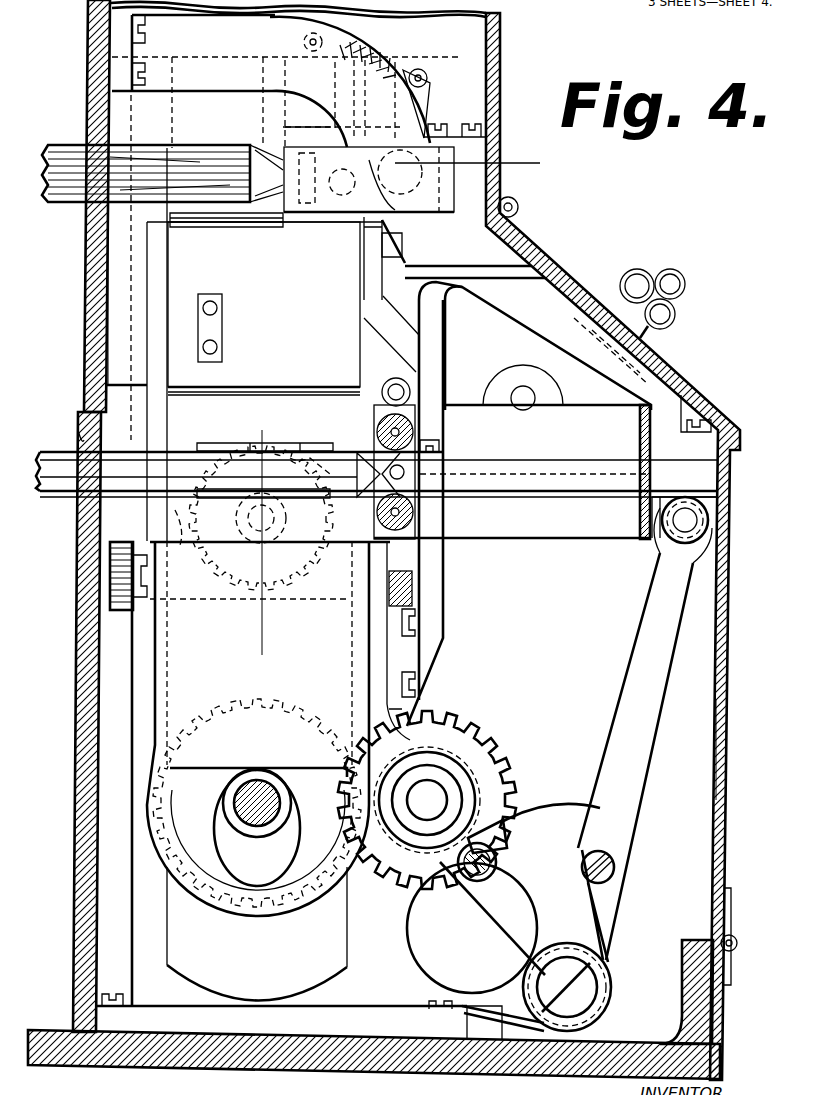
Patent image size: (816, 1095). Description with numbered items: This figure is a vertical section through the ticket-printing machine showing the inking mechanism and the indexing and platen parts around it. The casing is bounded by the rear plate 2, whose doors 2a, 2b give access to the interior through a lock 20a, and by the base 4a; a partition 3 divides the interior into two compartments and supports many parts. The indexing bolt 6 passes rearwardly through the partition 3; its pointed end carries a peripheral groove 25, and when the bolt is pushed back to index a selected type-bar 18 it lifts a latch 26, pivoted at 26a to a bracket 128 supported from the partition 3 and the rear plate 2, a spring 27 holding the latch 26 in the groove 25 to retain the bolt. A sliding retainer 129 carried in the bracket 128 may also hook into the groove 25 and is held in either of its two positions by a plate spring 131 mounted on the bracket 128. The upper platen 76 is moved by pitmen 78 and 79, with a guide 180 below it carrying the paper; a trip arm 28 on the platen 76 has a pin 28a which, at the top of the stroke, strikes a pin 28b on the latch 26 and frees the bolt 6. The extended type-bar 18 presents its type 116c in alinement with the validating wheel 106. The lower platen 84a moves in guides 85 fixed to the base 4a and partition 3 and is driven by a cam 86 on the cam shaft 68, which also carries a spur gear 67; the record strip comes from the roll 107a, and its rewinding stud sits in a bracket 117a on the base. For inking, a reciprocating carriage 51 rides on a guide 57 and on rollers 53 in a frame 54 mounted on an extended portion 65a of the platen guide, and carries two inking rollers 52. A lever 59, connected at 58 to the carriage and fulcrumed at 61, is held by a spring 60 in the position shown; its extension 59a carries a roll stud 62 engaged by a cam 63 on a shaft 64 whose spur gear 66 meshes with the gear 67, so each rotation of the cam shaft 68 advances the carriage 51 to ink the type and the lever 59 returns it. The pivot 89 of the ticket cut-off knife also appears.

The rear plate 2 is at (502, 70).
The door 2a is at (562, 268).
The door 2b is at (728, 647).
The partition 3 is at (88, 100).
The base 4a is at (369, 1046).
The indexing bolt 6 is at (48, 152).
The type-bar 18 is at (180, 459).
The lock 20a is at (661, 339).
The peripheral groove 25 is at (233, 157).
The retaining latch 26 is at (265, 145).
The latch pivot 26a is at (435, 179).
The spring 27 is at (396, 68).
The trip arm 28 is at (336, 100).
The pin 28a is at (358, 96).
The pin 28b is at (452, 206).
The inking roller carriage 51 is at (546, 517).
The inking rollers 52 is at (414, 435).
The rollers 53 is at (392, 392).
The roller frame 54 is at (395, 659).
The guide 57 is at (557, 465).
The lever connection 58 is at (670, 533).
The lever 59 is at (638, 667).
The lever extension 59a is at (568, 871).
The spring 60 is at (590, 907).
The lever fulcrum 61 is at (553, 967).
The roll stud 62 is at (480, 877).
The cam 63 is at (507, 800).
The shaft 64 is at (430, 803).
The extended portion of platen guide 65a is at (375, 680).
The spur gear 66 is at (469, 734).
The spur gear 67 is at (295, 724).
The cam shaft 68 is at (252, 782).
The upper platen 76 is at (264, 304).
The pitman 78 is at (372, 272).
The pitman 79 is at (157, 329).
The lower platen 84a is at (370, 940).
The guides 85 is at (157, 956).
The cam 86 is at (257, 827).
The knife pivot 89 is at (535, 397).
The validating wheel 106 is at (220, 591).
The paper roll 107a is at (312, 539).
The type 116c is at (309, 449).
The bracket 117a is at (223, 499).
The bracket 128 is at (378, 278).
The retainer 129 is at (454, 258).
The plate spring 131 is at (453, 130).
The guide 180 is at (312, 392).